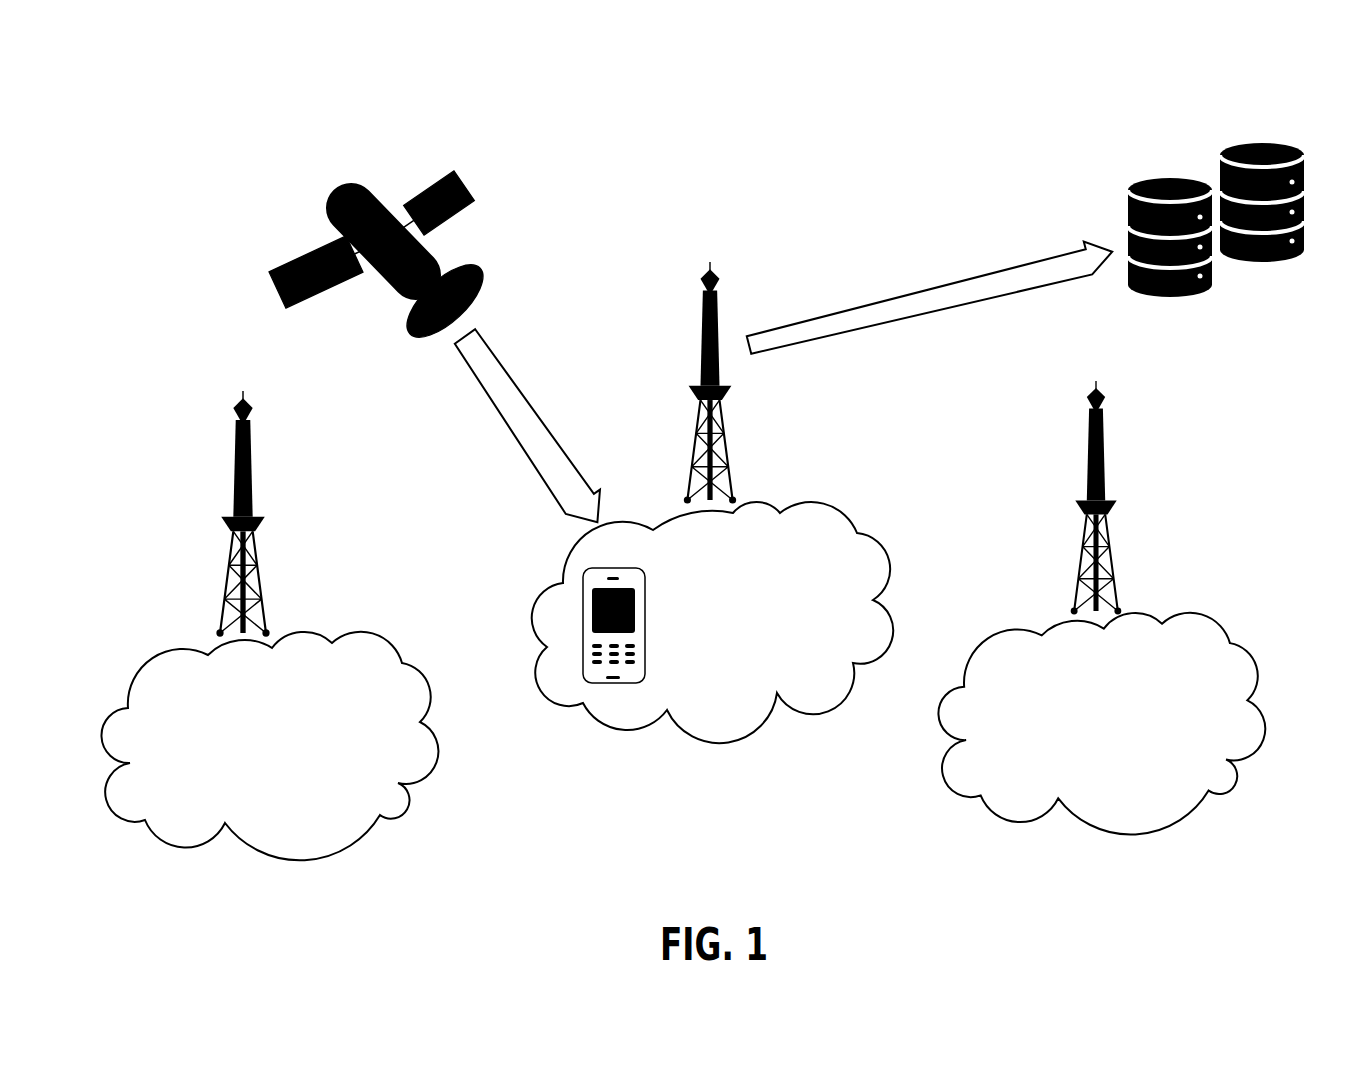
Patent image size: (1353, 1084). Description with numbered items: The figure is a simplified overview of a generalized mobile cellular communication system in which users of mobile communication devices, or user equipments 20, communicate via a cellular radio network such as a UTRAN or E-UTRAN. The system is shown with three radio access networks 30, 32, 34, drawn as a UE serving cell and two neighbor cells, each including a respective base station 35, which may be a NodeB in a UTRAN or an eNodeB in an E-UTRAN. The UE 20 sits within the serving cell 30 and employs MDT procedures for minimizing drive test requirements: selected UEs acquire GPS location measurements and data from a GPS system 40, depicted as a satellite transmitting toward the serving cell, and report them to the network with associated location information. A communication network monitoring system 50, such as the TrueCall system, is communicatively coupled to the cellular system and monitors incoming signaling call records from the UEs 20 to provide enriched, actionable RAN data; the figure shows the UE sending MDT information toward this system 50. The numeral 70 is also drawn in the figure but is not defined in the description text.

The user equipment 20 is at (568, 560).
The radio access network 30 is at (723, 743).
The radio access network 32 is at (380, 815).
The radio access network 34 is at (1015, 820).
The base station 35 is at (271, 568).
The GPS system 40 is at (374, 158).
The communication network monitoring system 50 is at (1199, 135).
The wireless communication network 70 is at (687, 138).